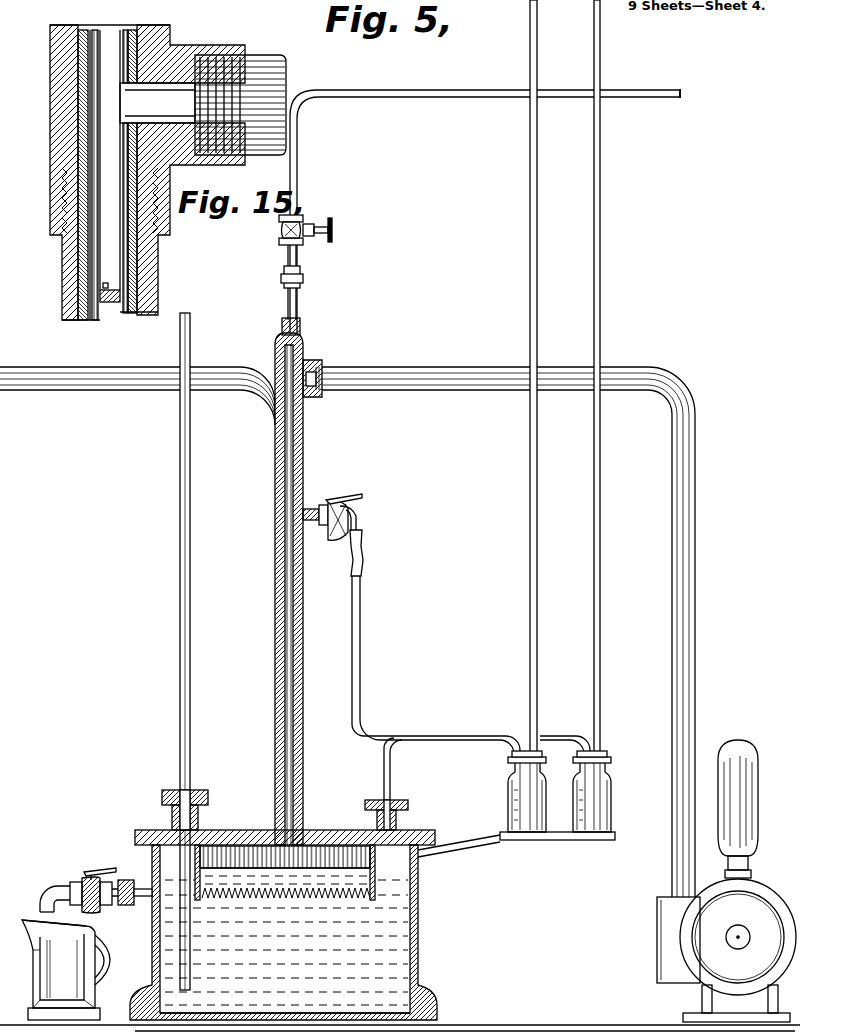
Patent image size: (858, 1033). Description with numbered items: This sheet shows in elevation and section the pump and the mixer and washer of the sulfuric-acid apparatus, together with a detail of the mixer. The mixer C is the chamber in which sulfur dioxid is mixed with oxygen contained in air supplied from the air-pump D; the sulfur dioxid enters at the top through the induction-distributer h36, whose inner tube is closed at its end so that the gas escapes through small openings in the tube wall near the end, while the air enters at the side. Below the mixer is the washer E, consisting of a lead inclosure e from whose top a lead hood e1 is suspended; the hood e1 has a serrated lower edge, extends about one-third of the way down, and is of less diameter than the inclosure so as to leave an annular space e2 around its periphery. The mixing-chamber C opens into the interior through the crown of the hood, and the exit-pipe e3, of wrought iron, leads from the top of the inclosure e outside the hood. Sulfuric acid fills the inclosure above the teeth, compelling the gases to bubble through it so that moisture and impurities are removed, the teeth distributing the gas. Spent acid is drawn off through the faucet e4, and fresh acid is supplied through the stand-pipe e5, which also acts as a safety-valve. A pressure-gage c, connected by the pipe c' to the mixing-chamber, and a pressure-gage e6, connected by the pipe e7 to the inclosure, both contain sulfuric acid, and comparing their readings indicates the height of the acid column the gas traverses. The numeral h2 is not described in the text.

In FIG. 15, the induction-distributer h36 is at (100, 318).
In FIG. 5, the induction-distributer h36 is at (297, 306).
In FIG. 5, the valve h2 is at (332, 230).
In FIG. 5, the exit-pipe e3 is at (118, 364).
In FIG. 5, the mixer C is at (305, 400).
In FIG. 5, the pipe c' is at (446, 625).
In FIG. 5, the stand-pipe e5 is at (191, 711).
In FIG. 5, the pipe e7 is at (392, 781).
In FIG. 5, the pressure-gage c is at (512, 791).
In FIG. 5, the pressure-gage e6 is at (611, 791).
In FIG. 5, the annular space e2 is at (392, 878).
In FIG. 5, the lead hood e1 is at (376, 884).
In FIG. 5, the lead inclosure e is at (420, 936).
In FIG. 5, the washer E is at (286, 940).
In FIG. 5, the faucet e4 is at (96, 906).
In FIG. 5, the air-pump D is at (726, 881).